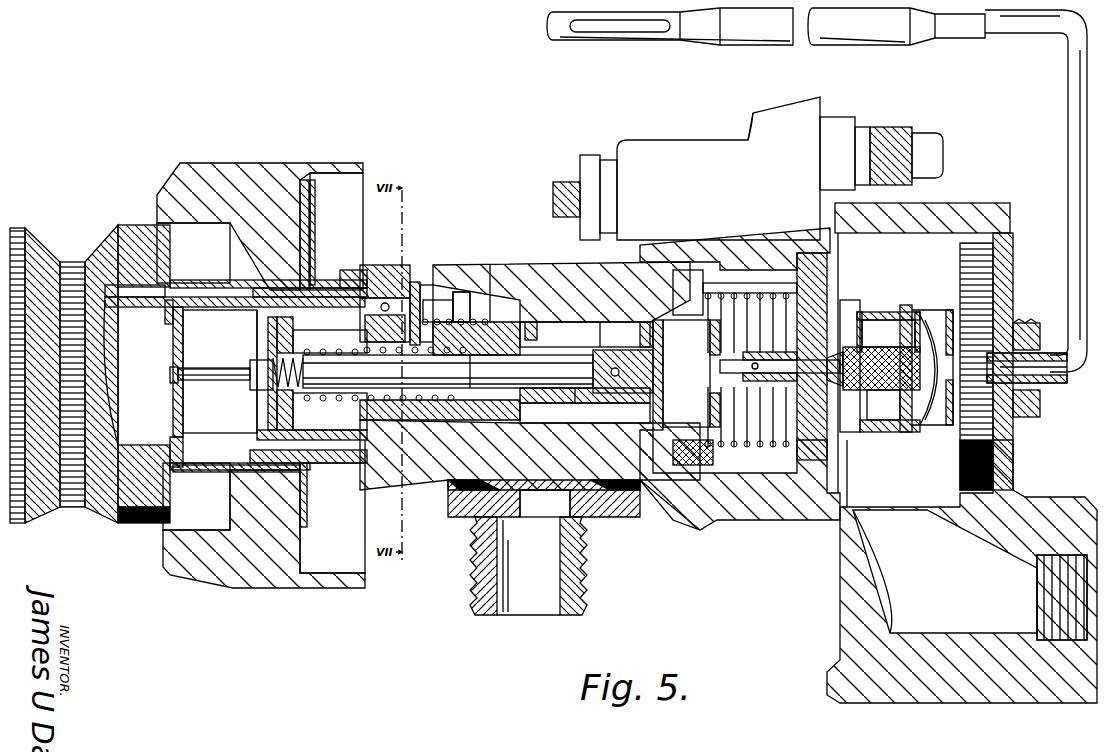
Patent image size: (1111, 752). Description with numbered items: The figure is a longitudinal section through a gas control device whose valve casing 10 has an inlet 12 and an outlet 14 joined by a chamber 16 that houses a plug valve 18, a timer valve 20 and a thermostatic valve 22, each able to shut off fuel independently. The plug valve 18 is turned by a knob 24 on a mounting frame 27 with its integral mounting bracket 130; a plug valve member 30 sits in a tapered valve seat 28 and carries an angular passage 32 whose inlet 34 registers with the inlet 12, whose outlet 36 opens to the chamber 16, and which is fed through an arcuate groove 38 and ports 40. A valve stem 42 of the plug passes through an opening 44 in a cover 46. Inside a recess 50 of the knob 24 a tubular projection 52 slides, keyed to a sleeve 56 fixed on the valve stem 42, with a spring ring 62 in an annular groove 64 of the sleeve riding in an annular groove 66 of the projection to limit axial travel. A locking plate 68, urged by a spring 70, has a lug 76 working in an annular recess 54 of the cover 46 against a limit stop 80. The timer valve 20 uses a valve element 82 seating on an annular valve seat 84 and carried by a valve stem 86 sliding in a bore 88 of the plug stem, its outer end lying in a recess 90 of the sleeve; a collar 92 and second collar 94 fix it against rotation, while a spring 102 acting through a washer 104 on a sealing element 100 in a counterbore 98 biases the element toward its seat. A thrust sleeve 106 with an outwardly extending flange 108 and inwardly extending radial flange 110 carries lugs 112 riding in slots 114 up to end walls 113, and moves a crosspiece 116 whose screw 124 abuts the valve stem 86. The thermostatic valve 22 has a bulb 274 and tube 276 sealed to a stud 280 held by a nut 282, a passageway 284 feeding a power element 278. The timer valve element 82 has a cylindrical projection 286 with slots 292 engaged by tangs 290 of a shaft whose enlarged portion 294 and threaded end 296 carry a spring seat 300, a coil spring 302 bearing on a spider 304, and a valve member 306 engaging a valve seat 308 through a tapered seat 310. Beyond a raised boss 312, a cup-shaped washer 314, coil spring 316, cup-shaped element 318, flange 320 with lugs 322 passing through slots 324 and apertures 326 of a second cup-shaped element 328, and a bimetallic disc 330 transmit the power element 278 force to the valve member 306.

The valve casing 10 is at (757, 522).
The inlet 12 is at (530, 605).
The outlet 14 is at (995, 612).
The chamber 16 is at (725, 528).
The plug valve 18 is at (465, 300).
The timer valve 20 is at (688, 292).
The thermostatic valve 22 is at (830, 278).
The knob 24 is at (108, 512).
The mounting frame 27 is at (235, 200).
The tapered valve seat 28 is at (575, 440).
The plug valve member 30 is at (505, 411).
The angular passage 32 is at (584, 403).
The inlet 34 is at (448, 371).
The outlet 36 is at (636, 420).
The arcuate groove 38 is at (598, 296).
The ports 40 is at (575, 300).
The valve stem 42 is at (470, 300).
The opening 44 is at (372, 280).
The cover 46 is at (346, 276).
The recess 50 is at (135, 281).
The tubular projection 52 is at (212, 308).
The annular recess 54 is at (414, 282).
The sleeve 56 is at (362, 333).
The spring ring 62 is at (363, 455).
The annular groove 64 is at (365, 413).
The annular groove 66 is at (350, 440).
The locking plate 68 is at (408, 395).
The spring 70 is at (495, 310).
The lug 76 is at (430, 320).
The limit stop 80 is at (445, 300).
The valve element 82 is at (655, 360).
The annular valve seat 84 is at (639, 334).
The valve stem 86 is at (592, 367).
The bore 88 is at (585, 334).
The recess 90 is at (295, 320).
The collar 92 is at (296, 410).
The second collar 94 is at (266, 412).
The counterbore 98 is at (426, 398).
The annular sealing element 100 is at (482, 362).
The spring 102 is at (301, 335).
The washer 104 is at (448, 368).
The thrust sleeve 106 is at (232, 270).
The outwardly extending flange 108 is at (336, 231).
The inwardly extending radial flange 110 is at (210, 283).
The lugs 112 is at (166, 312).
The end walls 113 is at (168, 298).
The slots 114 is at (235, 371).
The crosspiece 116 is at (172, 340).
The screw 124 is at (221, 368).
The mounting bracket 130 is at (262, 240).
The bulb 274 is at (888, 0).
The tube 276 is at (1065, 75).
The power element 278 is at (960, 258).
The stud 280 is at (1050, 350).
The nut 282 is at (1042, 408).
The passageway 284 is at (1062, 378).
The cylindrical projection 286 is at (685, 410).
The tangs 290 is at (712, 322).
The slots 292 is at (730, 290).
The enlarged portion 294 is at (832, 285).
The end 296 is at (925, 328).
The annular spring seat 300 is at (747, 313).
The coil spring 302 is at (735, 268).
The spider 304 is at (705, 283).
The valve member 306 is at (800, 450).
The valve seat 308 is at (795, 478).
The tapered seat 310 is at (845, 312).
The raised boss 312 is at (820, 355).
The cup-shaped washer 314 is at (862, 430).
The coil spring 316 is at (873, 383).
The cup-shaped element 318 is at (890, 320).
The flange 320 is at (906, 432).
The lugs 322 is at (915, 312).
The slots 324 is at (945, 315).
The apertures 326 is at (848, 410).
The second cup-shaped element 328 is at (953, 385).
The bimetallic disc 330 is at (953, 340).